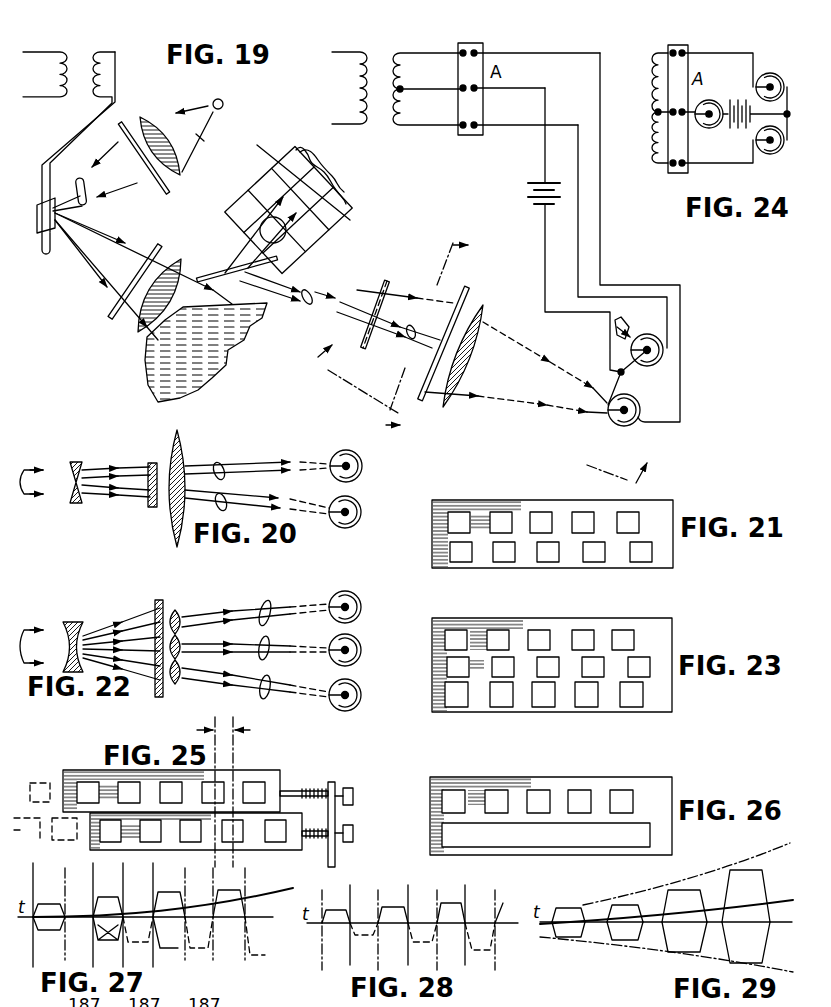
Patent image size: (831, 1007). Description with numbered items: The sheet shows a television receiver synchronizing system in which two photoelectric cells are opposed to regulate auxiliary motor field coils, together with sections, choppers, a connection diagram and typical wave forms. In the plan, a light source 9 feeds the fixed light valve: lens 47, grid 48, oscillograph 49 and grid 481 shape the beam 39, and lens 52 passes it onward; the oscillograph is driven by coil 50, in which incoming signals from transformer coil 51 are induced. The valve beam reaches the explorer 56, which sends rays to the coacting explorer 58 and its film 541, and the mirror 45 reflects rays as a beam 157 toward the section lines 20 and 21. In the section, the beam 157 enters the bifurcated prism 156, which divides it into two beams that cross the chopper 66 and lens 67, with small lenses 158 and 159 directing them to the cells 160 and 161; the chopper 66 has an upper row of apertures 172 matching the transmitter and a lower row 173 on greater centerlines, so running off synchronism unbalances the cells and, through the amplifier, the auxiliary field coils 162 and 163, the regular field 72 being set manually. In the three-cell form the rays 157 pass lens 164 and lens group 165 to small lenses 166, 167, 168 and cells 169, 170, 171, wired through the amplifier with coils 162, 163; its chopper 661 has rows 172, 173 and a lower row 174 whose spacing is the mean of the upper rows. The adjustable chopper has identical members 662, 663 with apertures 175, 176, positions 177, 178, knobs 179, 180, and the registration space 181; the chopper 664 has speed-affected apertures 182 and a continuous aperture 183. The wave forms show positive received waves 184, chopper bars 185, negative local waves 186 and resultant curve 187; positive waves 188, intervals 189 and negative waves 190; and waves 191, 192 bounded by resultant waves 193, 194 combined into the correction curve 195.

In FIG. 19, the light source 9 is at (227, 104).
In FIG. 19, the section line 20— 20 is at (347, 379).
In FIG. 21, the section line 20— 20 is at (617, 467).
In FIG. 19, the section line 21— 21 is at (439, 337).
In FIG. 19, the beam 39 is at (80, 178).
In FIG. 19, the mirror 45 is at (235, 264).
In FIG. 19, the lens 47 is at (163, 128).
In FIG. 19, the grid 48 is at (143, 165).
In FIG. 19, the oscillograph 49 is at (48, 224).
In FIG. 19, the coil 50 is at (88, 48).
In FIG. 19, the transformer coil 51 is at (45, 74).
In FIG. 19, the lens 52 is at (178, 265).
In FIG. 19, the explorer 56 is at (206, 352).
In FIG. 19, the coacting explorer 58 is at (268, 193).
In FIG. 19, the chopper 66 is at (484, 290).
In FIG. 20, the chopper 66 is at (152, 512).
In FIG. 21, the chopper 66 is at (519, 506).
In FIG. 19, the lens 67 is at (481, 320).
In FIG. 20, the lens 67 is at (184, 443).
In FIG. 19, the regular field coil 72 is at (349, 88).
In FIG. 19, the bifurcated prism 156 is at (389, 284).
In FIG. 20, the bifurcated prism 156 is at (73, 505).
In FIG. 19, the beam 157 is at (316, 289).
In FIG. 20, the beam 157 is at (39, 482).
In FIG. 22, the beam 157 is at (38, 646).
In FIG. 19, the oscillating light beam 158 is at (570, 400).
In FIG. 20, the oscillating light beam 158 is at (221, 462).
In FIG. 19, the small lens 159 is at (408, 336).
In FIG. 20, the small lens 159 is at (228, 494).
In FIG. 19, the cell 160 is at (617, 417).
In FIG. 20, the cell 160 is at (362, 468).
In FIG. 19, the cell 161 is at (647, 360).
In FIG. 20, the cell 161 is at (365, 512).
In FIG. 19, the auxiliary field coil 162 is at (428, 71).
In FIG. 24, the auxiliary field coil 162 is at (643, 82).
In FIG. 19, the auxiliary field coil 163 is at (428, 105).
In FIG. 24, the auxiliary field coil 163 is at (645, 136).
In FIG. 22, the lens 164 is at (81, 616).
In FIG. 22, the lens group 165 is at (181, 610).
In FIG. 22, the small lens 166 is at (268, 600).
In FIG. 22, the small lens 167 is at (266, 636).
In FIG. 22, the small lens 168 is at (268, 675).
In FIG. 24, the cell 169 is at (776, 76).
In FIG. 22, the cell 169 is at (362, 607).
In FIG. 24, the cell 170 is at (776, 153).
In FIG. 22, the cell 170 is at (361, 647).
In FIG. 24, the cell 171 is at (713, 126).
In FIG. 22, the cell 171 is at (361, 691).
In FIG. 21, the aperture 172 is at (583, 522).
In FIG. 23, the aperture 172 is at (583, 642).
In FIG. 21, the aperture 173 is at (640, 552).
In FIG. 23, the aperture 173 is at (642, 668).
In FIG. 23, the lower row of apertures 174 is at (588, 697).
In FIG. 25, the aperture 175 is at (257, 797).
In FIG. 25, the aperture 176 is at (233, 835).
In FIG. 25, the aperture position 177 is at (43, 783).
In FIG. 25, the continuation of the wave band 178 is at (62, 835).
In FIG. 25, the adjusting knob 179 is at (378, 782).
In FIG. 25, the adjusting knob 180 is at (355, 836).
In FIG. 25, the space 181 is at (224, 730).
In FIG. 26, the apertures 182 is at (620, 800).
In FIG. 26, the continuous aperture 183 is at (605, 863).
In FIG. 27, the positive waves 184 is at (57, 884).
In FIG. 27, the chopper bars 185 is at (92, 884).
In FIG. 27, the negative waves 186 is at (47, 932).
In FIG. 27, the resultant curve 187 is at (289, 902).
In FIG. 28, the waves 188 is at (412, 905).
In FIG. 28, the pulse interval 189 is at (377, 892).
In FIG. 28, the waves 190 is at (362, 935).
In FIG. 29, the pulse 191 is at (683, 893).
In FIG. 29, the negative pulse 192 is at (637, 928).
In FIG. 29, the resultant wave 193 is at (766, 851).
In FIG. 29, the resultant wave 194 is at (735, 966).
In FIG. 29, the resultant curve 195 is at (783, 902).
In FIG. 19, the grid 481 is at (141, 268).
In FIG. 19, the film strip 541 is at (320, 168).
In FIG. 22, the mask plate 661 is at (172, 600).
In FIG. 23, the mask plate 661 is at (528, 622).
In FIG. 25, the adjustable chopper member 662 is at (295, 767).
In FIG. 25, the adjustable chopper member 663 is at (294, 847).
In FIG. 26, the chopper 664 is at (537, 782).